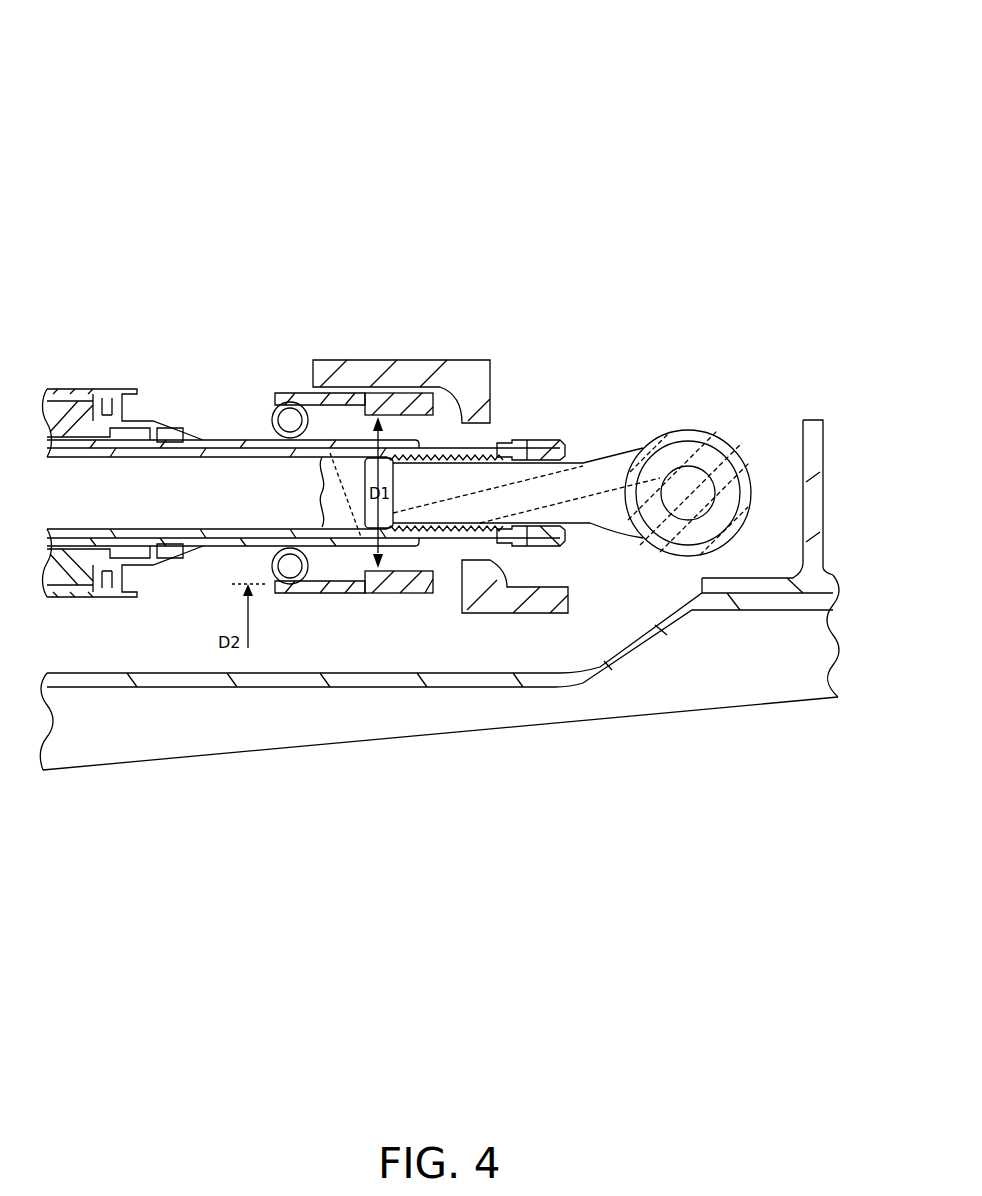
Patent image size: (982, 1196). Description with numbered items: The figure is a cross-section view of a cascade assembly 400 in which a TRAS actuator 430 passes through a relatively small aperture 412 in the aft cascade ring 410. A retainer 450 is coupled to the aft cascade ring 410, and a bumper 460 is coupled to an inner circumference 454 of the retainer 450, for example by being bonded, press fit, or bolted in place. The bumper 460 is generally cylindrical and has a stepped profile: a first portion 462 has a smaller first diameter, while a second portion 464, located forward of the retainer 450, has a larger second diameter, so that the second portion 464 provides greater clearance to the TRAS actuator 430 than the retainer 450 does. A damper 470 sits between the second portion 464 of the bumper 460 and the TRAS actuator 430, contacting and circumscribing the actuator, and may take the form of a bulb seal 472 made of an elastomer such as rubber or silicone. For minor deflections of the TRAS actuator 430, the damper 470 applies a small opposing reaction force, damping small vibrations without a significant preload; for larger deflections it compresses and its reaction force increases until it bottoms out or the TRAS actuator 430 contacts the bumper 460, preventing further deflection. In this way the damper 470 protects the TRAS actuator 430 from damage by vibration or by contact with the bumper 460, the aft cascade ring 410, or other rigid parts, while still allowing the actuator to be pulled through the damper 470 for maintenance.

The cascade assembly 400 is at (182, 84).
The aft cascade ring 410 is at (413, 359).
The aperture 412 is at (498, 424).
The TRAS actuator 430 is at (185, 556).
The retainer 450 is at (392, 394).
The inner circumference 454 is at (443, 562).
The bumper 460 is at (290, 392).
The first portion 462 is at (387, 592).
The second portion 464 is at (337, 593).
The damper 470 is at (300, 396).
The bulb seal 472 is at (274, 563).